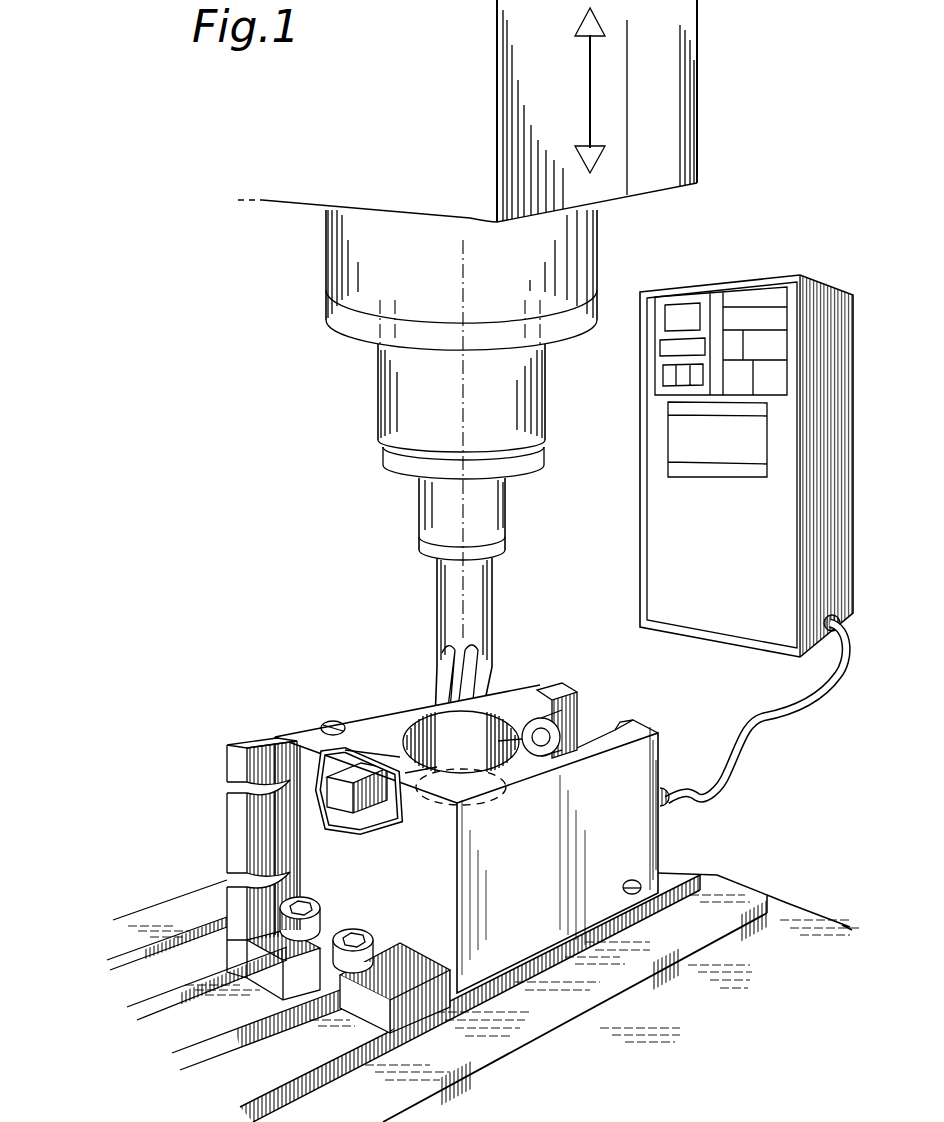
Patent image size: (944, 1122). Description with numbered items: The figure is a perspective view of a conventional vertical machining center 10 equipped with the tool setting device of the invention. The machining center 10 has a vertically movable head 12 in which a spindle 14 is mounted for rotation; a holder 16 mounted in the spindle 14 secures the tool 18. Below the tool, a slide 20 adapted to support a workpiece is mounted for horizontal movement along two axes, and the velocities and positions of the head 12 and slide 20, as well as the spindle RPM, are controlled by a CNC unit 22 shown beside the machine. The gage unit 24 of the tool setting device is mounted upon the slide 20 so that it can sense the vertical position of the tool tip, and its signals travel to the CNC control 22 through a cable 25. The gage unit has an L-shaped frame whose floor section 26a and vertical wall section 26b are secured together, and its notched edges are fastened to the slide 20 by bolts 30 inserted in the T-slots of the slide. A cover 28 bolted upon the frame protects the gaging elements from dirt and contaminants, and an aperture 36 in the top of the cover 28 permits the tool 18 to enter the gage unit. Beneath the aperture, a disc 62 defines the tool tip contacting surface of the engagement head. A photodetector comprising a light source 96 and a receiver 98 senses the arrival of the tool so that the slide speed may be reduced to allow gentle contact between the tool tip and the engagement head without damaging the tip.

The vertical machining center 10 is at (298, 385).
The head 12 is at (404, 180).
The spindle 14 is at (426, 508).
The holder 16 is at (424, 548).
The tool 18 is at (446, 600).
The slide 20 is at (508, 1022).
The CNC unit 22 is at (730, 612).
The gage unit 24 is at (200, 770).
The cable 25 is at (775, 720).
The floor section 26a is at (402, 965).
The vertical wall section 26b is at (237, 830).
The cover 28 is at (627, 862).
The bolts 30 is at (325, 903).
The aperture 36 is at (425, 722).
The disc 62 is at (500, 780).
The light source 96 is at (550, 708).
The receiver 98 is at (382, 825).